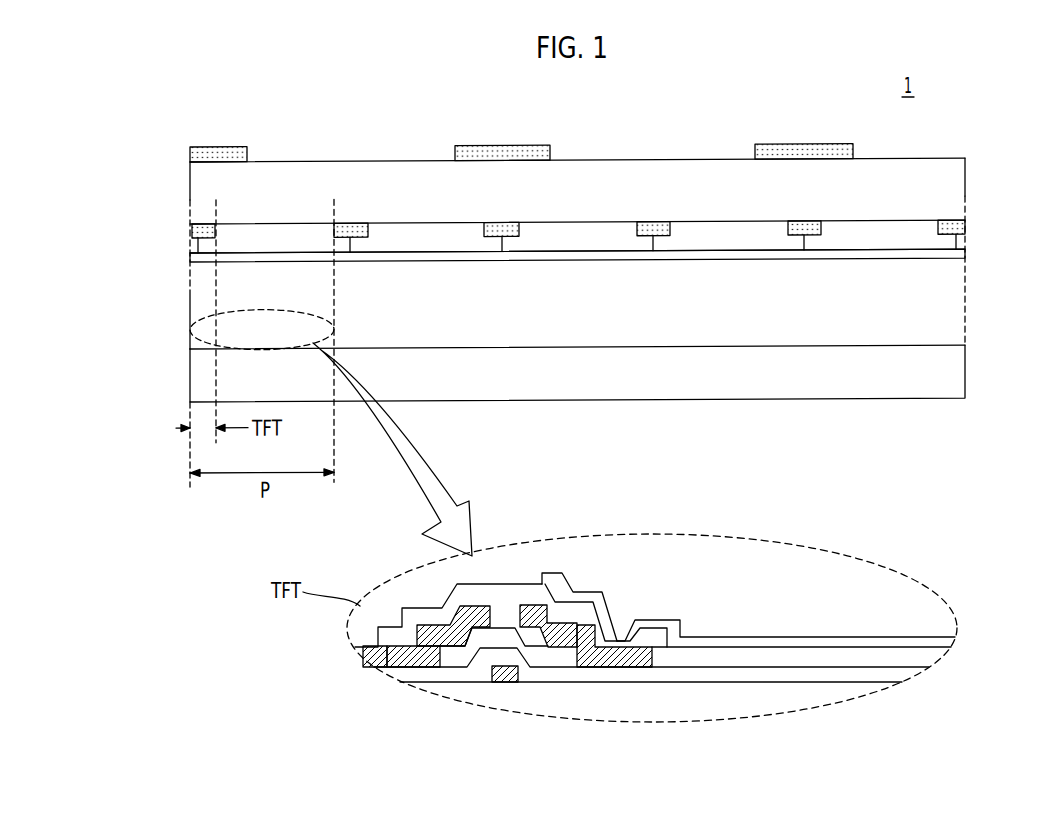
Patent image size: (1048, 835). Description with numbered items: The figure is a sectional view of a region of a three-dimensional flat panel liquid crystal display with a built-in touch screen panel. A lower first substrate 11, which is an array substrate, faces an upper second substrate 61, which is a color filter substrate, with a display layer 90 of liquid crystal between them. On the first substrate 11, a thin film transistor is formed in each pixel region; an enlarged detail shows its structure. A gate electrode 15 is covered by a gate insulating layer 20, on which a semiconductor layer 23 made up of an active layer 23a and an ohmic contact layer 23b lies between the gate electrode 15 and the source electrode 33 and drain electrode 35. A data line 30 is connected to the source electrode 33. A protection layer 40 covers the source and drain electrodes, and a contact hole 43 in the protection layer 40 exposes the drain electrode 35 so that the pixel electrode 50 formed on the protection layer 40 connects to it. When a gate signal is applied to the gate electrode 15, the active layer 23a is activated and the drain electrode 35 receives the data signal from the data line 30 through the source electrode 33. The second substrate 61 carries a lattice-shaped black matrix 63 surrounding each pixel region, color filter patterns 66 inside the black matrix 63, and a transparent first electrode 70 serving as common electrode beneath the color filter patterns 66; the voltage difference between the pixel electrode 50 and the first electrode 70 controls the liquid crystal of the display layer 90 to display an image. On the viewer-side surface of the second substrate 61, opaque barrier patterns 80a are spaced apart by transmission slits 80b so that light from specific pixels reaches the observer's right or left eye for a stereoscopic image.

The first substrate 11 is at (958, 380).
The gate electrode 15 is at (508, 684).
The gate insulating layer 20 is at (688, 675).
The semiconductor layer 23 is at (519, 718).
The active layer 23a is at (443, 662).
The ohmic contact layer 23b is at (472, 650).
The data line 30 is at (392, 660).
The source electrode 33 is at (467, 607).
The drain electrode 35 is at (534, 604).
The protection layer 40 is at (783, 658).
The contact hole 43 is at (625, 619).
The pixel electrode 50 is at (853, 645).
The second substrate 61 is at (958, 197).
The black matrix 63 is at (193, 236).
The color filter patterns 66 is at (282, 240).
The first electrode 70 is at (958, 256).
The barrier patterns 80a is at (493, 161).
The transmission region (slit) 80b is at (587, 152).
The display layer 90 is at (958, 300).